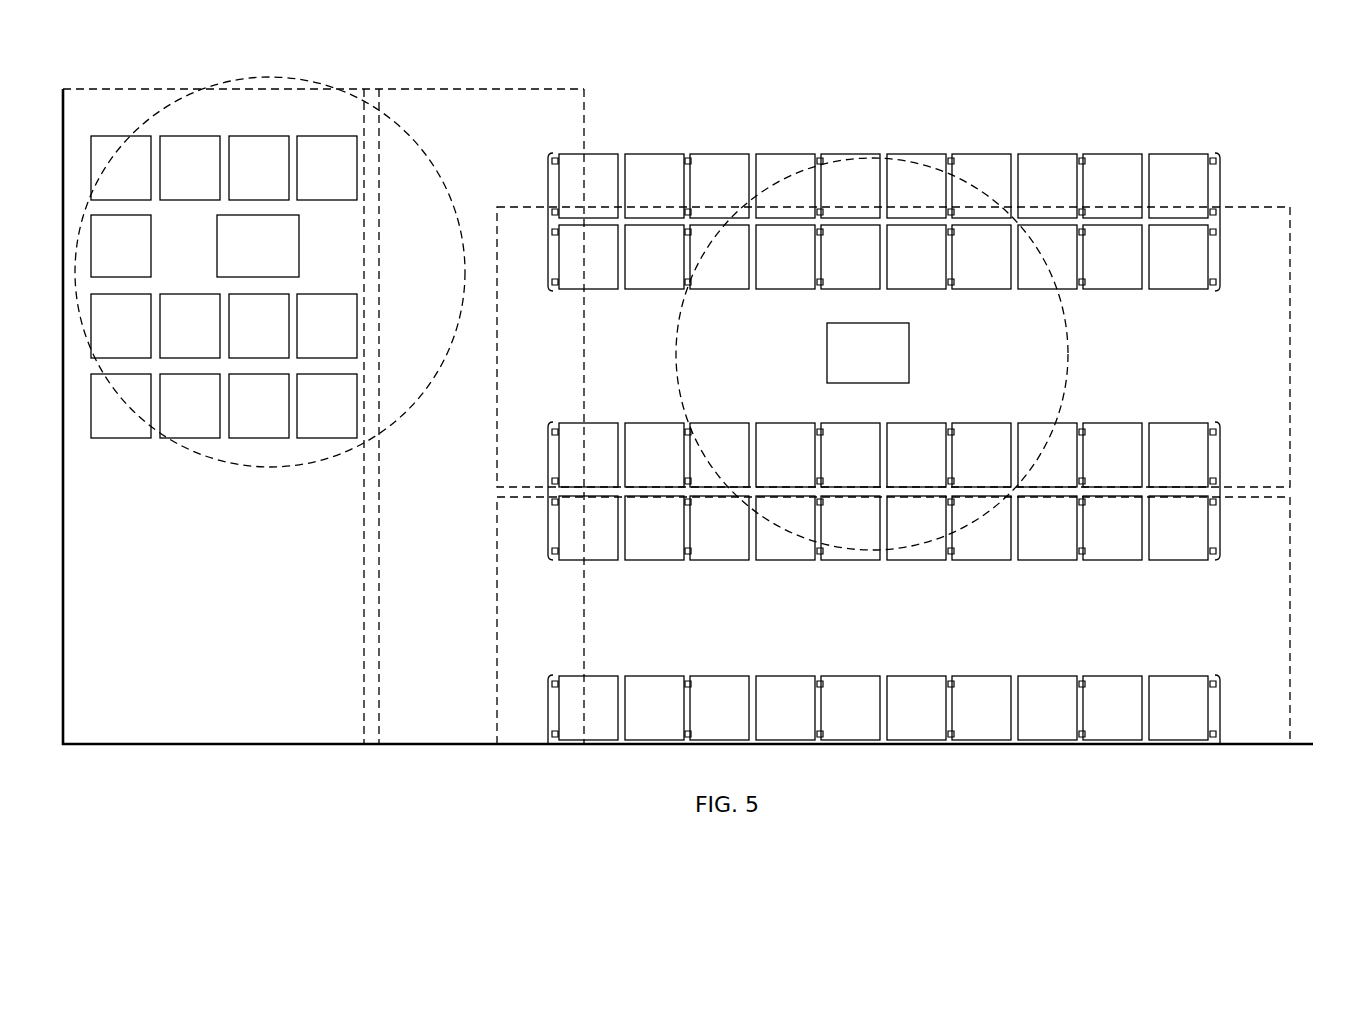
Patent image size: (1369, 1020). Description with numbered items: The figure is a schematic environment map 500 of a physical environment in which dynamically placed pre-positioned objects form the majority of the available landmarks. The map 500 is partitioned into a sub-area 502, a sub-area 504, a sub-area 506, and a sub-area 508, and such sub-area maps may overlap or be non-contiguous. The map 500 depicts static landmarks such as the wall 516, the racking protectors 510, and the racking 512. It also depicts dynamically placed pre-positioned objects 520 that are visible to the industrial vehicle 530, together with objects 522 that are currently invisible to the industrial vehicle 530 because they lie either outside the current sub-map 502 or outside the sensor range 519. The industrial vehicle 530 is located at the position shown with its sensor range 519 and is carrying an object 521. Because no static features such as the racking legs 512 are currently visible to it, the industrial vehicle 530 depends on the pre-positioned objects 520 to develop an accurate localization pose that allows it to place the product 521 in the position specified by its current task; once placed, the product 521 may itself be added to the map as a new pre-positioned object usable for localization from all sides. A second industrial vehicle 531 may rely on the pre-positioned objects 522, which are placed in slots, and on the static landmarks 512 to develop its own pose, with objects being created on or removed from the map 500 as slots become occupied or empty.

The environment map 500 is at (1111, 66).
The sub-area 502 is at (379, 102).
The sub-area 504 is at (1290, 252).
The sub-area 506 is at (1290, 600).
The sub-area 508 is at (584, 115).
The racking protectors 510 is at (547, 175).
The racking 512 is at (950, 152).
The wall 516 is at (121, 746).
The sensor range 519 is at (212, 463).
The dynamically placed pre-positioned objects 520 is at (224, 287).
The object 521 is at (1067, 350).
The objects 522 is at (883, 447).
The industrial vehicle 530 is at (242, 258).
The second industrial vehicle 531 is at (852, 365).